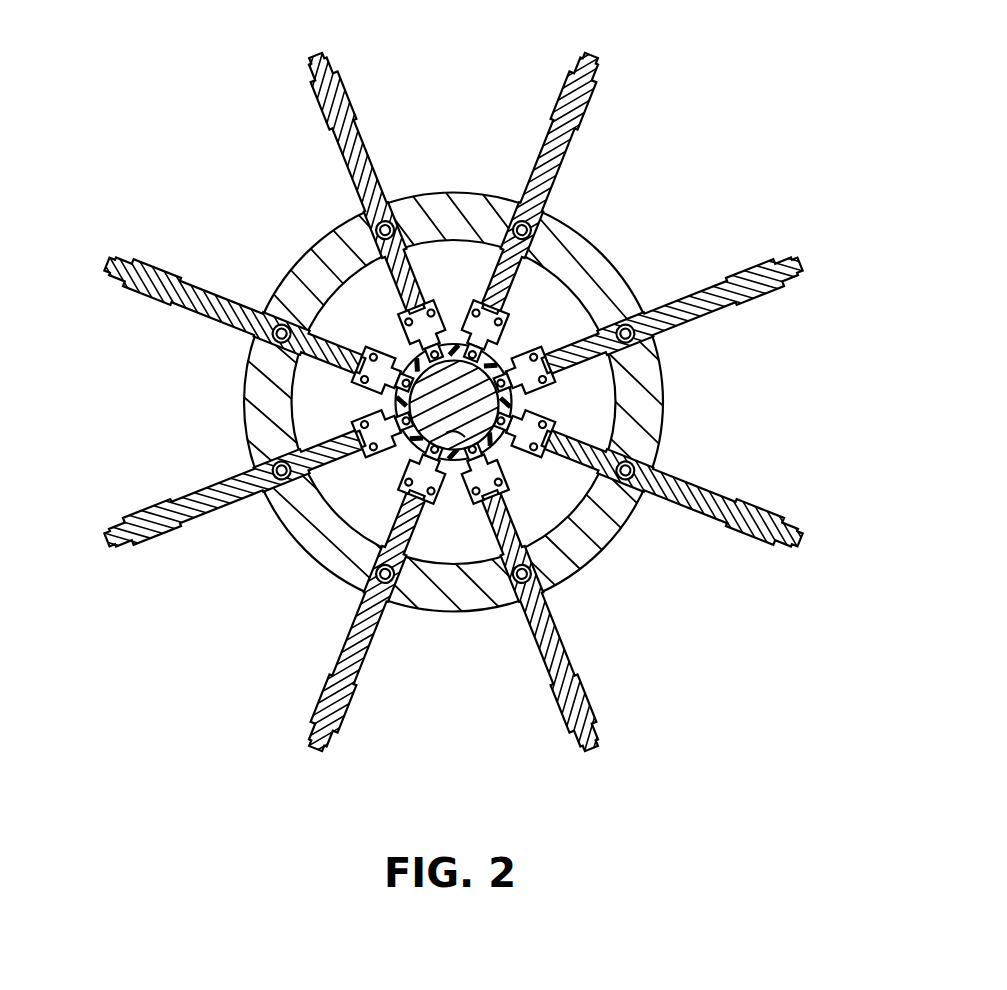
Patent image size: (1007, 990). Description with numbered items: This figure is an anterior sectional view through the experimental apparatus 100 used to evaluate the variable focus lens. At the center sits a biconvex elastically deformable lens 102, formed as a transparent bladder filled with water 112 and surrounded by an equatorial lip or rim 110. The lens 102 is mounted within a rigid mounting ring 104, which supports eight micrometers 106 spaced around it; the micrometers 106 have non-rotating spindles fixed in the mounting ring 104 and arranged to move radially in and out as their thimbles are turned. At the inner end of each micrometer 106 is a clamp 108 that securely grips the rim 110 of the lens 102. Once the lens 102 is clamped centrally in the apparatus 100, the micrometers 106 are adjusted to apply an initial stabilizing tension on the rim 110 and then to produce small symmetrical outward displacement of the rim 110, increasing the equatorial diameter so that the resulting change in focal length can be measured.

The experimental apparatus 100 is at (460, 412).
The elastically deformable lens 102 is at (398, 398).
The mounting ring 104 is at (313, 262).
The micrometers 106 is at (314, 56).
The clamp 108 is at (366, 346).
The equatorial lip or rim 110 is at (512, 401).
The water 112 is at (455, 438).